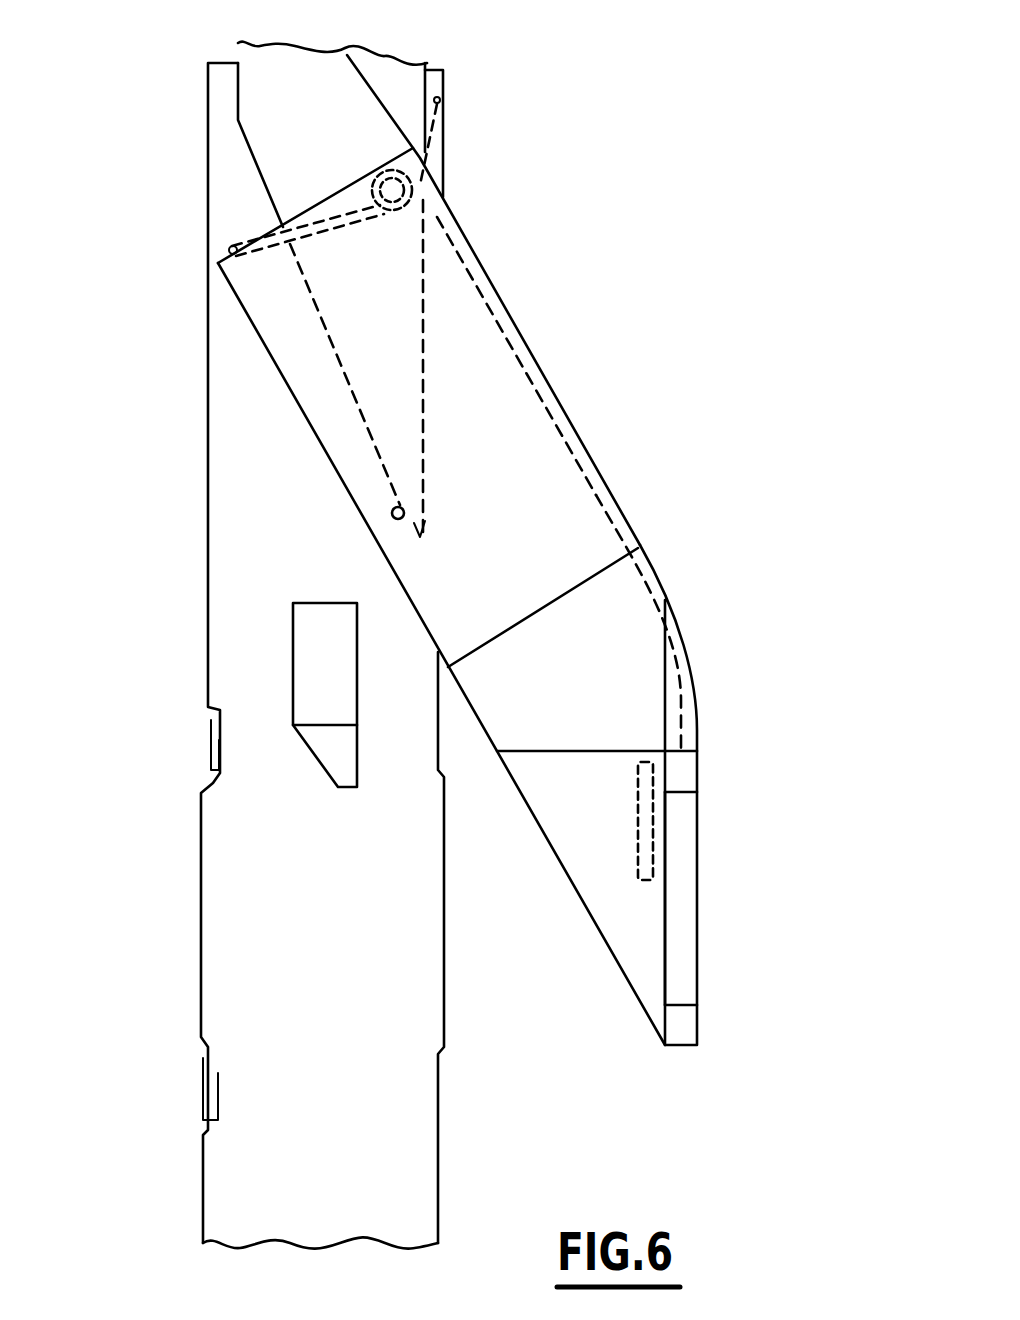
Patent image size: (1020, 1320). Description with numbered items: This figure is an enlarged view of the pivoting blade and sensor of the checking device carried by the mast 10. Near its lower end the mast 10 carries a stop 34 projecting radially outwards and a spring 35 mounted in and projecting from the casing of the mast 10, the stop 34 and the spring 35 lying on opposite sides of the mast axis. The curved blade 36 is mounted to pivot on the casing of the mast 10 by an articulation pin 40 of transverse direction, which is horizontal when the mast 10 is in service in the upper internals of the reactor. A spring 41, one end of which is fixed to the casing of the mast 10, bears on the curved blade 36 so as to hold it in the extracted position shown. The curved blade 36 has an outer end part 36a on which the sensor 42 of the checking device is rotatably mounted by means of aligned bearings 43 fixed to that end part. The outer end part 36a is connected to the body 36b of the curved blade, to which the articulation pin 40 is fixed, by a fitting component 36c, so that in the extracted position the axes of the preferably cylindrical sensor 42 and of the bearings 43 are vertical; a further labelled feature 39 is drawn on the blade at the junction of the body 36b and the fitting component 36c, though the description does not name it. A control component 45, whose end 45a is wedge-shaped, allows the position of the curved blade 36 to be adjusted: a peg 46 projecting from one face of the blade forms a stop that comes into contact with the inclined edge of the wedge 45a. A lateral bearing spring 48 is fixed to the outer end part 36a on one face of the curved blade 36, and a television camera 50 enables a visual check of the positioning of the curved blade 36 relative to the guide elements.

The mast 10 is at (310, 656).
The spring 35 is at (200, 912).
The stop 34 is at (444, 968).
The television camera 50 is at (313, 642).
The control component 45 is at (398, 82).
The wedge-shaped end 45a is at (418, 420).
The peg 46 is at (404, 514).
The articulation pin 40 is at (405, 189).
The spring 41 is at (440, 142).
The curved blade 36 is at (500, 596).
The outer end part 36a is at (640, 985).
The body 36b is at (510, 362).
The fitting component 36c is at (640, 668).
The fold line 39 is at (606, 514).
The bearings 43 is at (680, 770).
The sensor 42 is at (700, 820).
The lateral bearing spring 48 is at (650, 880).